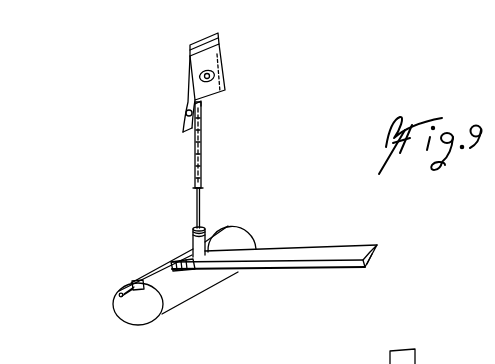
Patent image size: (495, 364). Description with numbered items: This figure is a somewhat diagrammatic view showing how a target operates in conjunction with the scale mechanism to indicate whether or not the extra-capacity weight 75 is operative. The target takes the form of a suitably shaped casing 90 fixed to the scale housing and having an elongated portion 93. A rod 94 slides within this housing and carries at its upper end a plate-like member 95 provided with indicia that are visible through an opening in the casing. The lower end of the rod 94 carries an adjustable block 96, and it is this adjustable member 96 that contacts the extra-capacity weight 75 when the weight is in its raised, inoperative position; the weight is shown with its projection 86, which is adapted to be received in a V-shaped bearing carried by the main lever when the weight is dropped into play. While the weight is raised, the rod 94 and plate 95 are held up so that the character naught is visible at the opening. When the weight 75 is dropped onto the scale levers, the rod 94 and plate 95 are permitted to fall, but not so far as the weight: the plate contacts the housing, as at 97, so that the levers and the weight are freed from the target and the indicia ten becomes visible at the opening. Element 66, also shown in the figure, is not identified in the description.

The frame member 66 is at (413, 359).
The weight 75 is at (186, 290).
The projection 86 is at (134, 290).
The casing 90 is at (201, 147).
The elongated portion 93 is at (202, 172).
The rod 94 is at (200, 205).
The plate-like member 95 is at (188, 87).
The adjustable block 96 is at (228, 226).
The contact point between plate and housing 97 is at (202, 104).